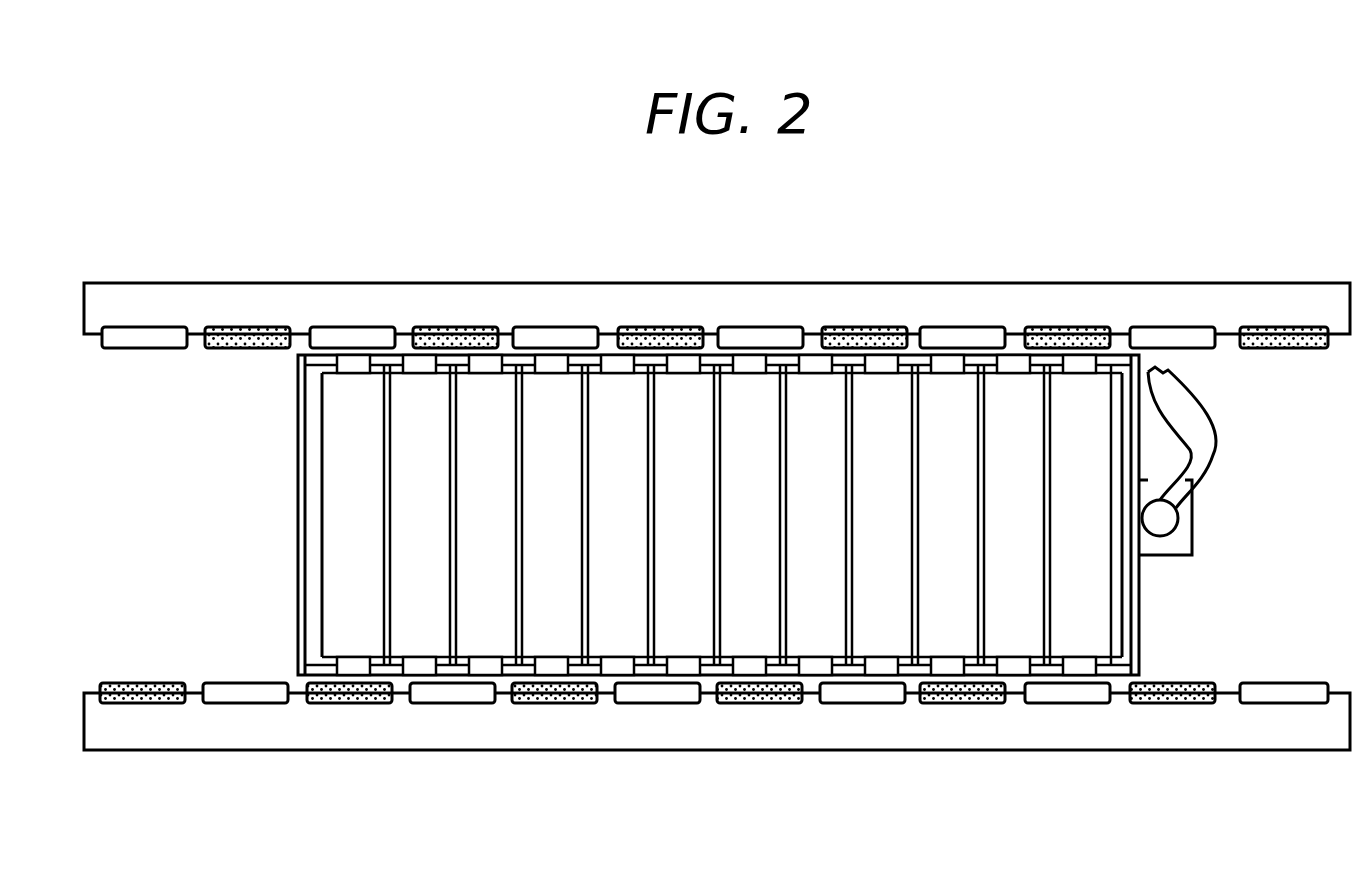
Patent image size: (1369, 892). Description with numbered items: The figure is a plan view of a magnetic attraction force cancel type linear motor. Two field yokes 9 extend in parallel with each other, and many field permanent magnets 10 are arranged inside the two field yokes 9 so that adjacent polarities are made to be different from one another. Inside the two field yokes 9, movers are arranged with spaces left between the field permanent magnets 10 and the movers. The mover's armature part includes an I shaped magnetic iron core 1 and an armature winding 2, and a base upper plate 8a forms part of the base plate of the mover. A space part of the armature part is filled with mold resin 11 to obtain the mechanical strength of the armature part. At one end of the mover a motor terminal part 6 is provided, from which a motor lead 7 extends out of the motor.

The I shaped magnetic iron core 1 is at (1013, 368).
The armature winding 2 is at (420, 400).
The motor terminal part 6 is at (1184, 540).
The motor lead 7 is at (1213, 432).
The base upper plate 8a is at (553, 405).
The field yoke 9 is at (872, 283).
The field permanent magnet 10 is at (762, 334).
The mold resin 11 is at (311, 500).